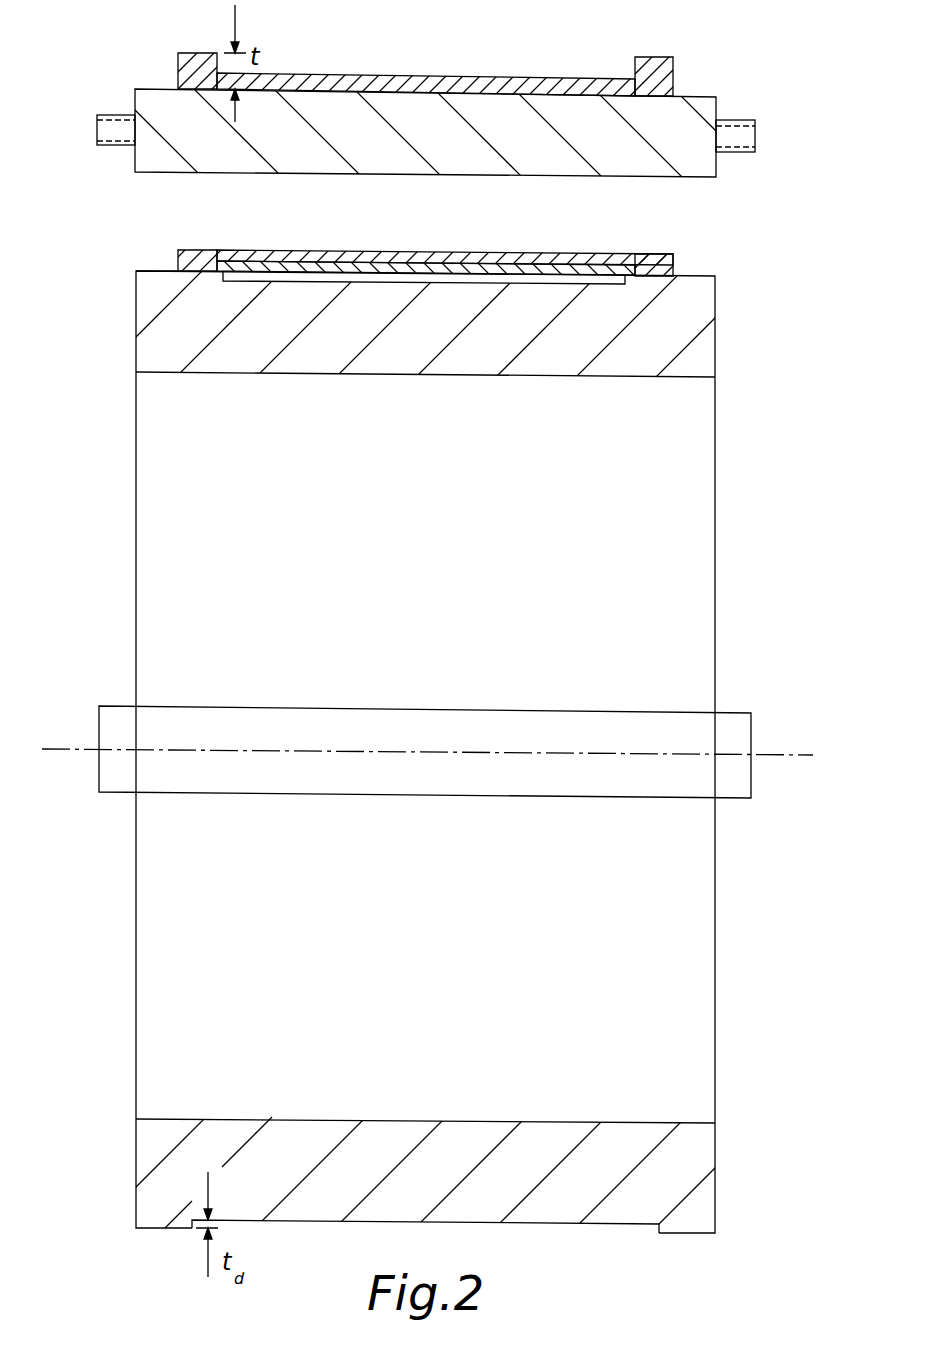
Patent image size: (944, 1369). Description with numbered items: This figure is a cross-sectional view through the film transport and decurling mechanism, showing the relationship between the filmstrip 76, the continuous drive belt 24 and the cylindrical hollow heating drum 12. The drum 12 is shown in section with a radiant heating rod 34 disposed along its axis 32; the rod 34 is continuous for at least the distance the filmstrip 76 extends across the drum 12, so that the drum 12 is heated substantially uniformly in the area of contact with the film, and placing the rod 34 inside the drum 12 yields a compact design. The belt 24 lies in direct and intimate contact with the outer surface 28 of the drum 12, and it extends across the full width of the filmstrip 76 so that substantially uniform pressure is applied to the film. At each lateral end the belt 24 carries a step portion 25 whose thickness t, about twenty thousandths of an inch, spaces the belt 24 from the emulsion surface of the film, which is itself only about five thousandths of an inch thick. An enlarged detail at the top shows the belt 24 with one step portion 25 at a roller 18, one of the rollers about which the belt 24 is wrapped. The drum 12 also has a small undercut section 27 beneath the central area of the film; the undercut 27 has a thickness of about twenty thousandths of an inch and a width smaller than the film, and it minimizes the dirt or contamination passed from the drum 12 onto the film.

The cylindrical hollow heating drum 12 is at (717, 567).
The roller 18 is at (690, 104).
The continuous drive belt 24 is at (540, 73).
The step portions 25 is at (198, 58).
The undercut section 27 is at (455, 278).
The outer surface 28 is at (150, 270).
The axis 32 is at (798, 757).
The radiant heating rod 34 is at (738, 713).
The filmstrip 76 is at (307, 266).